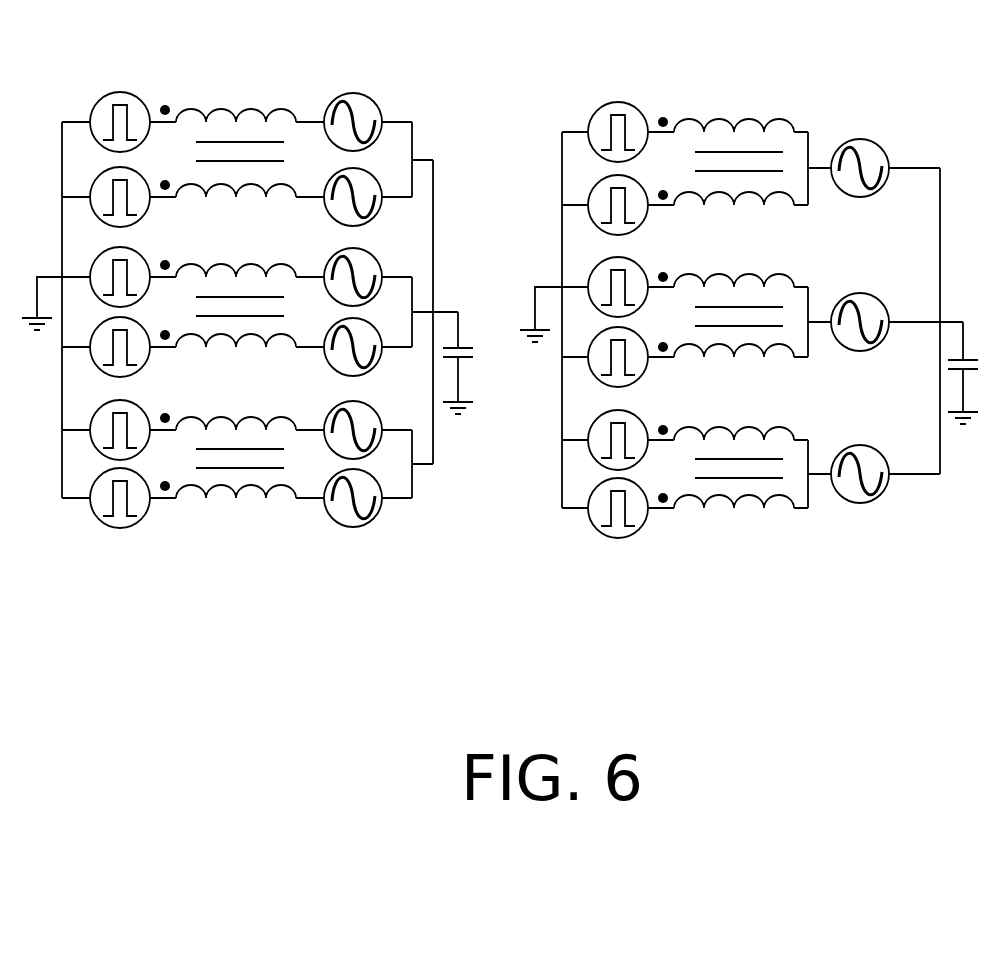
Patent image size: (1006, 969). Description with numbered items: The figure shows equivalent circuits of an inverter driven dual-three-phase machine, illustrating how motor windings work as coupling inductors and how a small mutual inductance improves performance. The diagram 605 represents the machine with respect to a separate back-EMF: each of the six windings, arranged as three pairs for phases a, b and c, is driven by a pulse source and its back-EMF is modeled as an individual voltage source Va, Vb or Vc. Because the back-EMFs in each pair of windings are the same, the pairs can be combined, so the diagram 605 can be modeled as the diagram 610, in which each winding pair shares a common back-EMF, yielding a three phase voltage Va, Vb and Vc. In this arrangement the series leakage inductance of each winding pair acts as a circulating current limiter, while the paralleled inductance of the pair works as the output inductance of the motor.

The diagram 605 is at (247, 339).
The diagram 610 is at (749, 343).